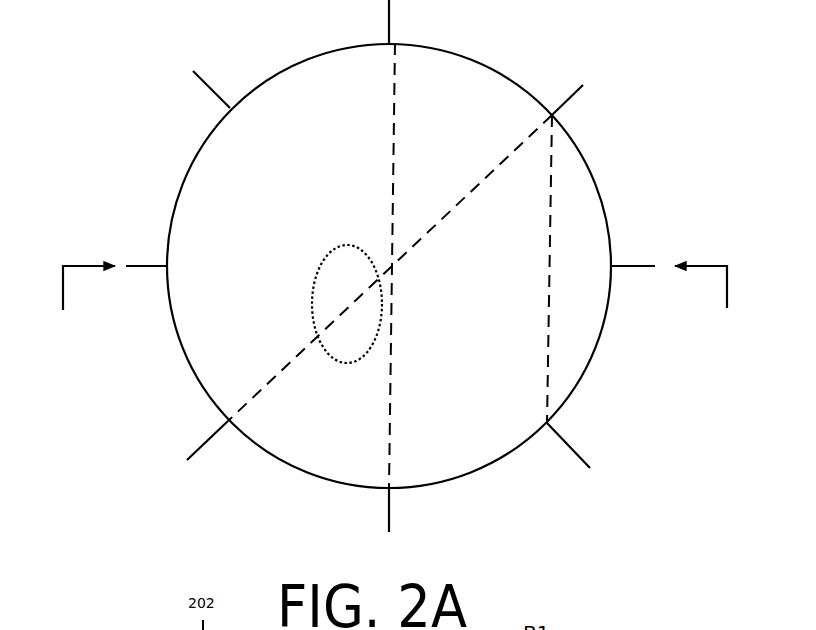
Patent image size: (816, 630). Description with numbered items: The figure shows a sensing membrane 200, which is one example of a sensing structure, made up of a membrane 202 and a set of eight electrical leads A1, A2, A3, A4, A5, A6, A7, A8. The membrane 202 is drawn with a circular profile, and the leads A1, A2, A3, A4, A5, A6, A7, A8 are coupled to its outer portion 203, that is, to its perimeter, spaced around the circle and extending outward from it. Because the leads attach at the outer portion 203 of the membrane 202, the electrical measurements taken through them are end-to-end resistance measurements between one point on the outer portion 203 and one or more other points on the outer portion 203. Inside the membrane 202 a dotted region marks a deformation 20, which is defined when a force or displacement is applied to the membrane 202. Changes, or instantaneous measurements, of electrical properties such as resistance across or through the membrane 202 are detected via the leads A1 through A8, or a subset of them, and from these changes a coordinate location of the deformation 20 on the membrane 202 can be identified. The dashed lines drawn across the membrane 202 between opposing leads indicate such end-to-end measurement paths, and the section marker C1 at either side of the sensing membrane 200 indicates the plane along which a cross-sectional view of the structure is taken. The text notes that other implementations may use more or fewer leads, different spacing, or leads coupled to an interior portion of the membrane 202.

The sensing membrane 200 is at (343, 247).
The membrane 202 is at (389, 247).
The outer portion 203 is at (522, 80).
The deformation 20 is at (316, 270).
The lead A1 is at (411, 21).
The lead A2 is at (587, 107).
The lead A3 is at (639, 288).
The lead A4 is at (582, 442).
The lead A5 is at (416, 511).
The lead A6 is at (215, 450).
The lead A7 is at (138, 247).
The lead A8 is at (220, 74).
The section line C1 is at (395, 307).